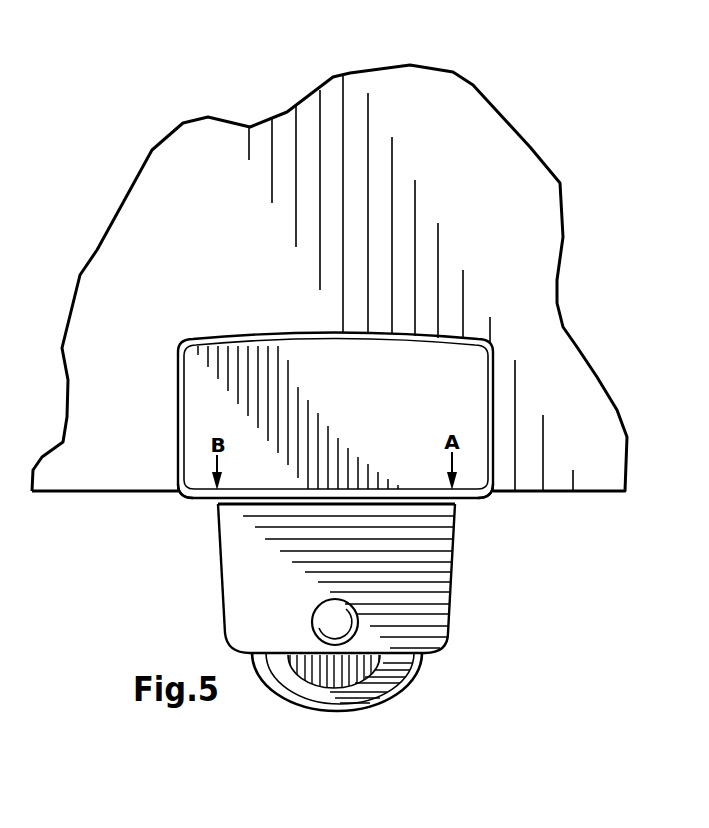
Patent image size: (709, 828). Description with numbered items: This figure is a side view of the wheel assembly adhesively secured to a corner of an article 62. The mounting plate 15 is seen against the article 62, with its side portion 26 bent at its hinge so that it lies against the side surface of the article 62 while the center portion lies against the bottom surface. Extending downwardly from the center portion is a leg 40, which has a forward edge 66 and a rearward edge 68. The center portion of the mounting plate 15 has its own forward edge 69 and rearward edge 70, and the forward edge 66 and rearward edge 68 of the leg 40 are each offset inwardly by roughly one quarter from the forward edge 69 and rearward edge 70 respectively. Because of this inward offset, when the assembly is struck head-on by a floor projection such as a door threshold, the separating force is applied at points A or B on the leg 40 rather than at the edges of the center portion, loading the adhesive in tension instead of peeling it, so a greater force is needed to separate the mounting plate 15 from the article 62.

The article 62 is at (173, 277).
The side portion 26 is at (388, 396).
The rearward edge of center portion 70 is at (183, 505).
The forward edge of center portion 69 is at (492, 502).
The mounting plate 15 is at (497, 527).
The forward edge of leg 66 is at (452, 568).
The rearward edge of leg 68 is at (218, 560).
The leg 40 is at (250, 600).